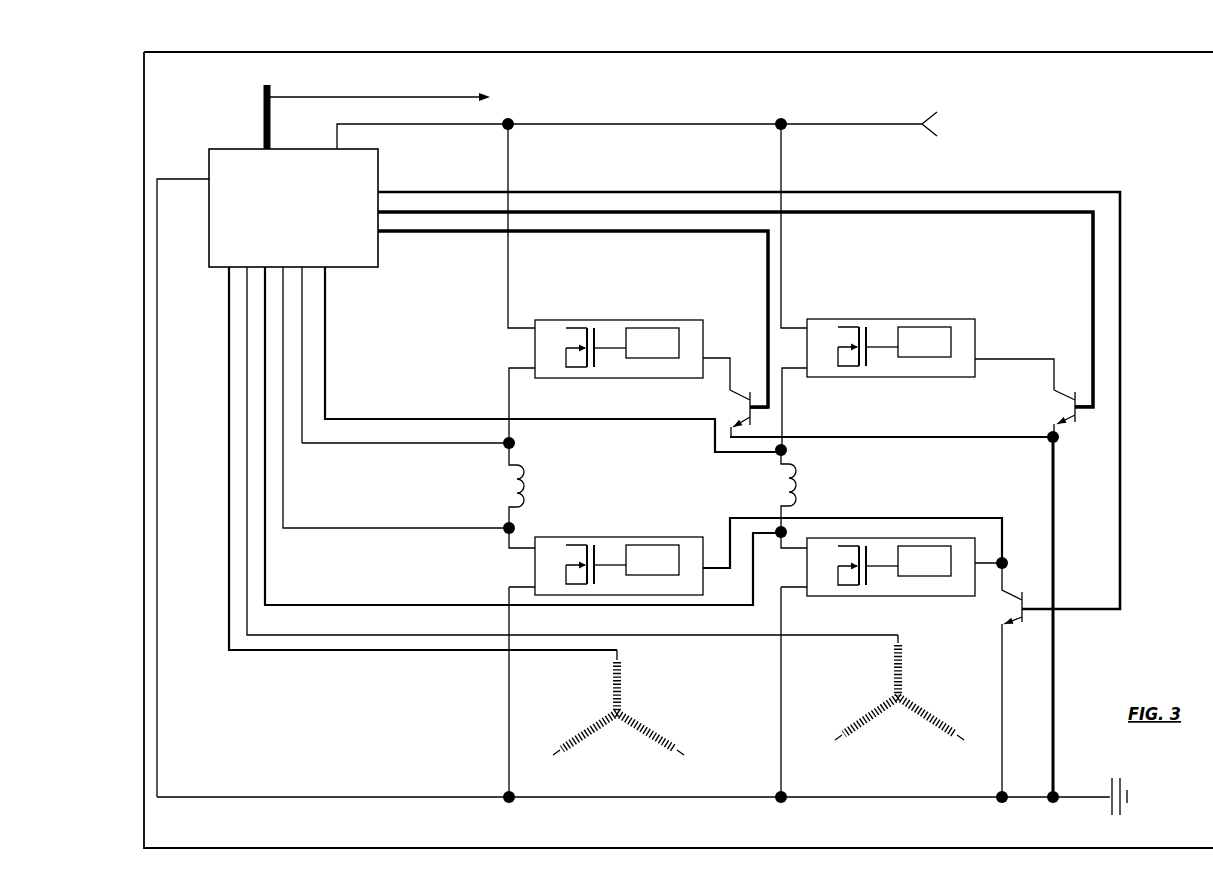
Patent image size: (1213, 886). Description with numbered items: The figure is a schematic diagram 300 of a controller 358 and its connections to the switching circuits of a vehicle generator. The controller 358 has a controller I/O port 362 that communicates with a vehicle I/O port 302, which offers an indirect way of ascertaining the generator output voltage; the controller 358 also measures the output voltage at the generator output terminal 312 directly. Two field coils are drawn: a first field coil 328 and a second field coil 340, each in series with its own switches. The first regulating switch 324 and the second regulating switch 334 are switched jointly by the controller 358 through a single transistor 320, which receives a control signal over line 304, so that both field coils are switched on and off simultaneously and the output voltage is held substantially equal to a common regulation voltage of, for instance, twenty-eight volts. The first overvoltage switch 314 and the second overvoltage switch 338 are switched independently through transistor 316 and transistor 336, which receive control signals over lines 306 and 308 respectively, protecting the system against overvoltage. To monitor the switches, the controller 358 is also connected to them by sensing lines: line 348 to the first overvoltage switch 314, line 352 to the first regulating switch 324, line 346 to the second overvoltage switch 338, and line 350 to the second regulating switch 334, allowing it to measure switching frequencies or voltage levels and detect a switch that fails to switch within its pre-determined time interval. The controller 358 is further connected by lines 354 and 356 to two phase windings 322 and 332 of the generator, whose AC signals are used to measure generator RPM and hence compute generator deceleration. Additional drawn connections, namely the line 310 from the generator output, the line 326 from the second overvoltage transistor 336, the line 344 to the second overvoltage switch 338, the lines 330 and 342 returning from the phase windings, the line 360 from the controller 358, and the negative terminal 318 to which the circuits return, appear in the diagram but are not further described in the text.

The schematic diagram 300 is at (198, 47).
The vehicle I/O port 302 is at (303, 96).
The line 304 is at (398, 192).
The line 306 is at (515, 210).
The line 308 is at (560, 230).
The generator output line to first overvoltage switch 310 is at (780, 150).
The output terminal 312 is at (923, 135).
The first overvoltage switch 314 is at (977, 343).
The transistor 316 is at (1062, 420).
The negative terminal 318 is at (1128, 797).
The transistor 320 is at (1007, 620).
The phase winding 322 is at (925, 708).
The first regulating switch 324 is at (902, 597).
The second overvoltage transistor output line 326 is at (845, 433).
The first field coil 328 is at (797, 493).
The phase 1 line to negative 330 is at (782, 703).
The phase winding 332 is at (650, 727).
The second regulating switch 334 is at (677, 535).
The transistor 336 is at (728, 418).
The second overvoltage switch 338 is at (545, 378).
The second field coil 340 is at (525, 470).
The phase 2 line to negative 342 is at (508, 698).
The generator output line to second overvoltage switch 344 is at (508, 253).
The line 346 is at (367, 443).
The line 348 is at (358, 419).
The line 350 is at (283, 447).
The line 352 is at (265, 423).
The line 354 is at (247, 398).
The line 356 is at (228, 333).
The controller 358 is at (222, 270).
The controller negative line 360 is at (197, 180).
The controller I/O port 362 is at (267, 127).